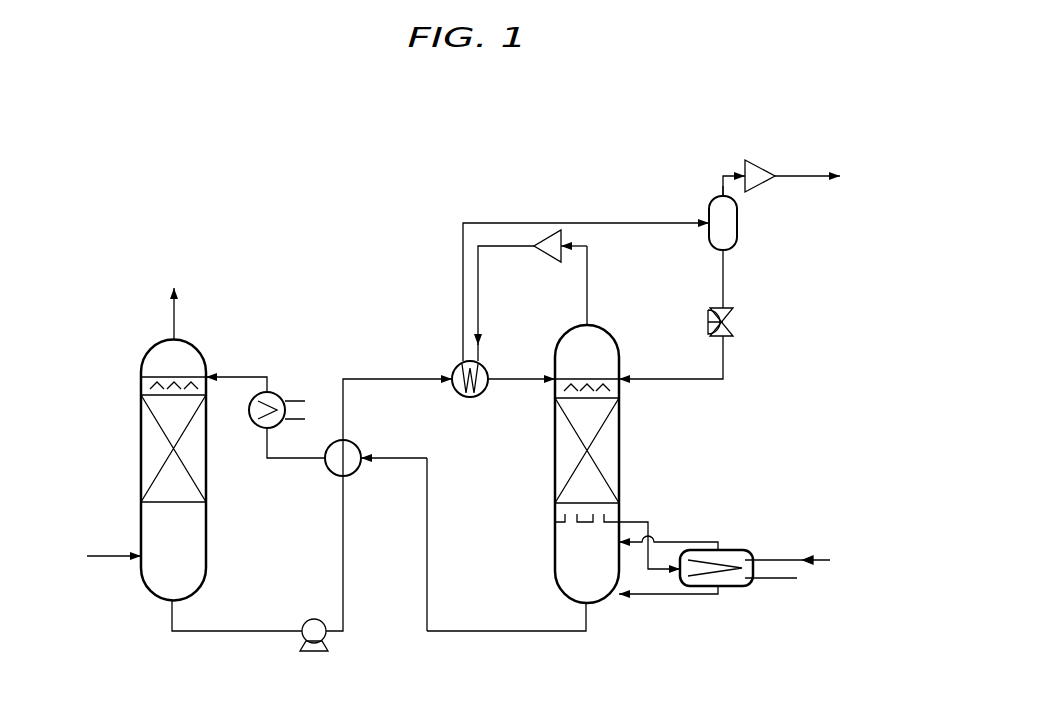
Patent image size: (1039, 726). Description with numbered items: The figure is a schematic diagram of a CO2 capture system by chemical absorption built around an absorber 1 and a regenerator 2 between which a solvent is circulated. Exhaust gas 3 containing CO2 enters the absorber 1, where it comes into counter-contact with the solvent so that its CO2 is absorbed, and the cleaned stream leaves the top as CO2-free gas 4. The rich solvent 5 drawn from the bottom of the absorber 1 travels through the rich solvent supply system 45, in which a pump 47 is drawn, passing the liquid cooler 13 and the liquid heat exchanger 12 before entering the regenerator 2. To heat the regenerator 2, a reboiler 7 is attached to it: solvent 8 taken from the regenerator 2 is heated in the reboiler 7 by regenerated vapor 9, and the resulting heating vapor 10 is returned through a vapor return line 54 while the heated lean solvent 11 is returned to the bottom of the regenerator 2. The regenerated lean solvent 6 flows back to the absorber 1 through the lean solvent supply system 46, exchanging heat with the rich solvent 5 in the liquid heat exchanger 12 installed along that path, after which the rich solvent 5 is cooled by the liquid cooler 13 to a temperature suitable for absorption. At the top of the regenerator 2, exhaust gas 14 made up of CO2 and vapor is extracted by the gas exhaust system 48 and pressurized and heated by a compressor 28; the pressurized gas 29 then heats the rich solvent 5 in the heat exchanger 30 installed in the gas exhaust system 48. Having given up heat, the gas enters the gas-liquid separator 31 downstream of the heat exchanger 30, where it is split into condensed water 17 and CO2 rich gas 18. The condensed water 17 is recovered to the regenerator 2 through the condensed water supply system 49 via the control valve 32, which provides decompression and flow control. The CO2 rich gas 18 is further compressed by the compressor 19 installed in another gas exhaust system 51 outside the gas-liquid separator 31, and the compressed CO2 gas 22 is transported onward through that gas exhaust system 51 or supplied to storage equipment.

The absorber 1 is at (141, 440).
The regenerator 2 is at (553, 347).
The exhaust gas 3 is at (110, 556).
The CO2-free gas 4 is at (172, 313).
The rich solvent 5 is at (262, 633).
The lean solvent 6 is at (530, 633).
The reboiler 7 is at (740, 548).
The solvent 8 is at (634, 521).
The regenerated vapor 9 is at (815, 560).
The heating vapor 10 is at (697, 542).
The lean solvent 11 is at (665, 600).
The liquid heat exchanger 12 is at (358, 444).
The liquid cooler 13 is at (280, 394).
The exhaust gas 14 is at (587, 308).
The condensed water 17 is at (723, 360).
The CO2 rich gas 18 is at (722, 190).
The compressor 19 is at (752, 160).
The compressed CO2 gas 22 is at (805, 176).
The compressor 28 is at (562, 236).
The pressurized gas 29 is at (483, 345).
The heat exchanger 30 is at (456, 363).
The gas-liquid separator 31 is at (737, 223).
The control valve 32 is at (733, 323).
The rich solvent supply system 45 is at (222, 630).
The lean solvent supply system 46 is at (480, 631).
The pump 47 is at (313, 655).
The gas exhaust system 48 is at (587, 276).
The condensed water supply system 49 is at (723, 278).
The gas exhaust system 51 is at (720, 192).
The vapor return line 54 is at (653, 543).